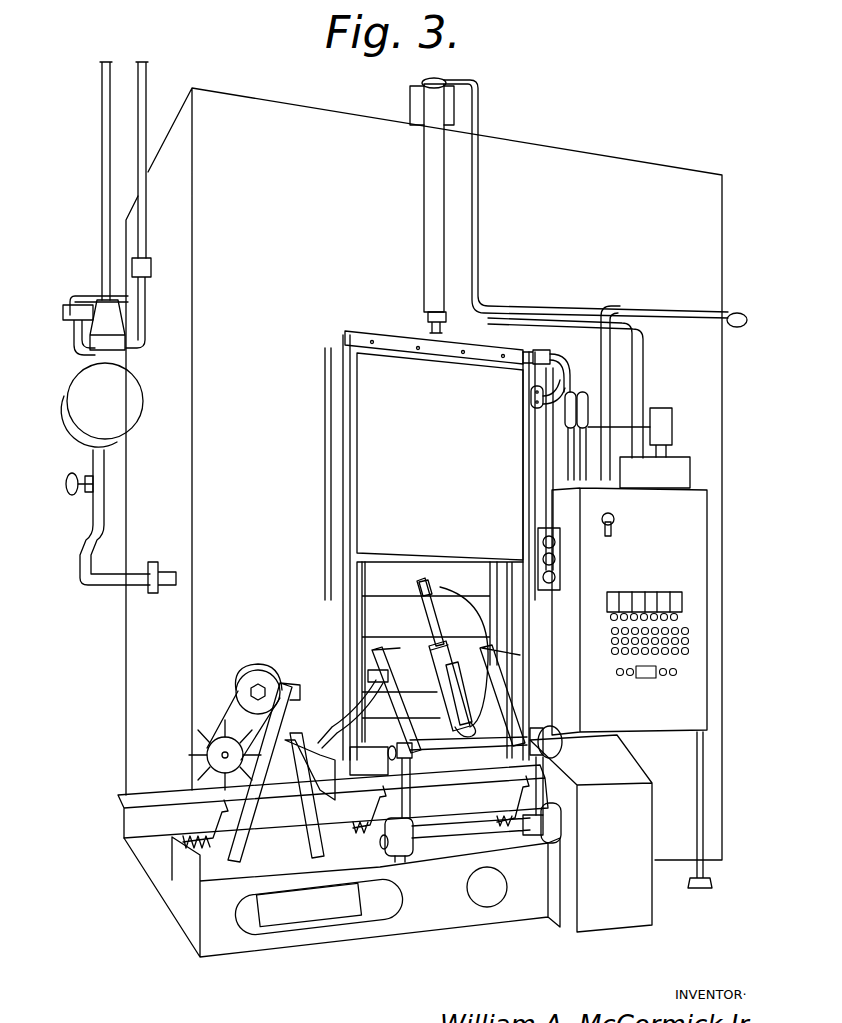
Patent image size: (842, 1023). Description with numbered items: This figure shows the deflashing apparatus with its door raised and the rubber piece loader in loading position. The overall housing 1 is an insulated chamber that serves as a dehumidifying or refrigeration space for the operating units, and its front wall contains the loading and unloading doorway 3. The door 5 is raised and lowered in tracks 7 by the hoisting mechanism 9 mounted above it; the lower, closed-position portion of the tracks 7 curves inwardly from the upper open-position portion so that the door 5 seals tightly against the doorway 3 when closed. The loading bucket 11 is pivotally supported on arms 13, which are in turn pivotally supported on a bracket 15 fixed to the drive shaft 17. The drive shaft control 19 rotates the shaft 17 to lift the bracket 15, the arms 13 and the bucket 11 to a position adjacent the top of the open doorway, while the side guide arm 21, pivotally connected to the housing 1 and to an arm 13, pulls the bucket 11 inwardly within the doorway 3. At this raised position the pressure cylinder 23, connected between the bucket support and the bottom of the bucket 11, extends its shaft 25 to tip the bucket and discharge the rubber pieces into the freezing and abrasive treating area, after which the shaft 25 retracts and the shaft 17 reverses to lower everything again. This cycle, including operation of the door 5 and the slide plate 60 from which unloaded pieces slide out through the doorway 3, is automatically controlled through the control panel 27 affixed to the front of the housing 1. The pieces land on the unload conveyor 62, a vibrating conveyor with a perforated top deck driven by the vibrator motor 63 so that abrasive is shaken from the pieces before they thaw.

The housing 1 is at (612, 165).
The loading and unloading doorway 3 is at (498, 570).
The door 5 is at (446, 442).
The tracks 7 is at (330, 348).
The hoisting mechanism 9 is at (424, 208).
The loading bucket 11 is at (429, 652).
The arms 13 is at (410, 716).
The bracket 15 is at (402, 766).
The drive shaft 17 is at (437, 835).
The drive shaft control 19 is at (620, 838).
The side guide arm 21 is at (335, 730).
The pressure cylinder 23 is at (456, 719).
The shaft 25 is at (430, 615).
The control panel 27 is at (668, 533).
The slide plate 60 is at (502, 769).
The unload conveyor 62 is at (143, 830).
The vibrator motor 63 is at (260, 670).